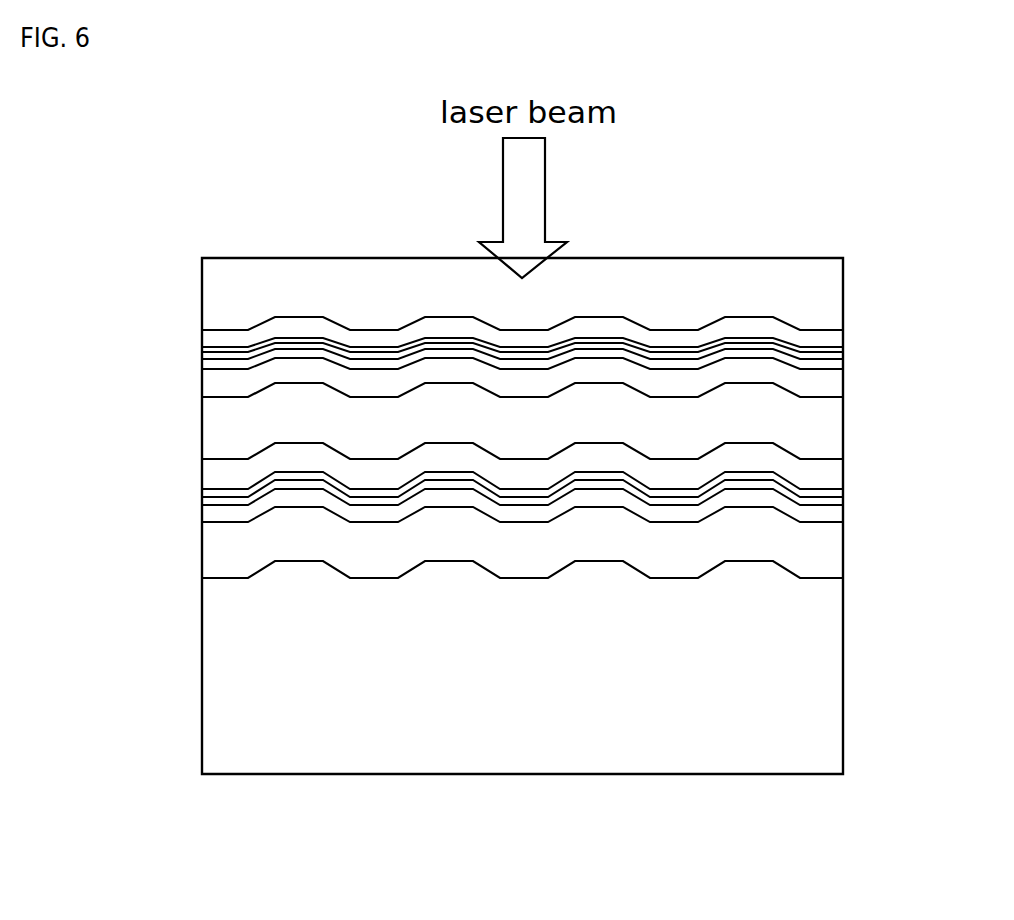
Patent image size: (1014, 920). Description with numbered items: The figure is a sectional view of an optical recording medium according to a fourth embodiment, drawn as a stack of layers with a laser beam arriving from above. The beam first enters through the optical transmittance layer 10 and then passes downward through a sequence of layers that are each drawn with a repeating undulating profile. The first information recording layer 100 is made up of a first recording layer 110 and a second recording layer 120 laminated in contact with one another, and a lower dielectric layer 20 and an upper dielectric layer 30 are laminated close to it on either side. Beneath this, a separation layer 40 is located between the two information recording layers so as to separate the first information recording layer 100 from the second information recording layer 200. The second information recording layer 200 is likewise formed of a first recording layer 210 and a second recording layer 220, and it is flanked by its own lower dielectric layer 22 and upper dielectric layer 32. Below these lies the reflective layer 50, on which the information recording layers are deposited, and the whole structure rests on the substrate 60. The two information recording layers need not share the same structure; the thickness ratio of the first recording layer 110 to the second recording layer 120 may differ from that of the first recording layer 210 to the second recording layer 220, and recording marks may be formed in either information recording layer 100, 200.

The optical transmittance layer 10 is at (836, 293).
The lower dielectric layer 20 is at (837, 337).
The information recording layer 100 is at (530, 377).
The first recording layer 110 is at (843, 352).
The second recording layer 120 is at (843, 357).
The upper dielectric layer 30 is at (838, 383).
The separation layer 40 is at (837, 426).
The lower dielectric layer 22 is at (838, 472).
The information recording layer 200 is at (528, 512).
The first recording layer 210 is at (843, 493).
The second recording layer 220 is at (843, 500).
The upper dielectric layer 32 is at (840, 517).
The reflective layer 50 is at (838, 553).
The substrate 60 is at (836, 687).